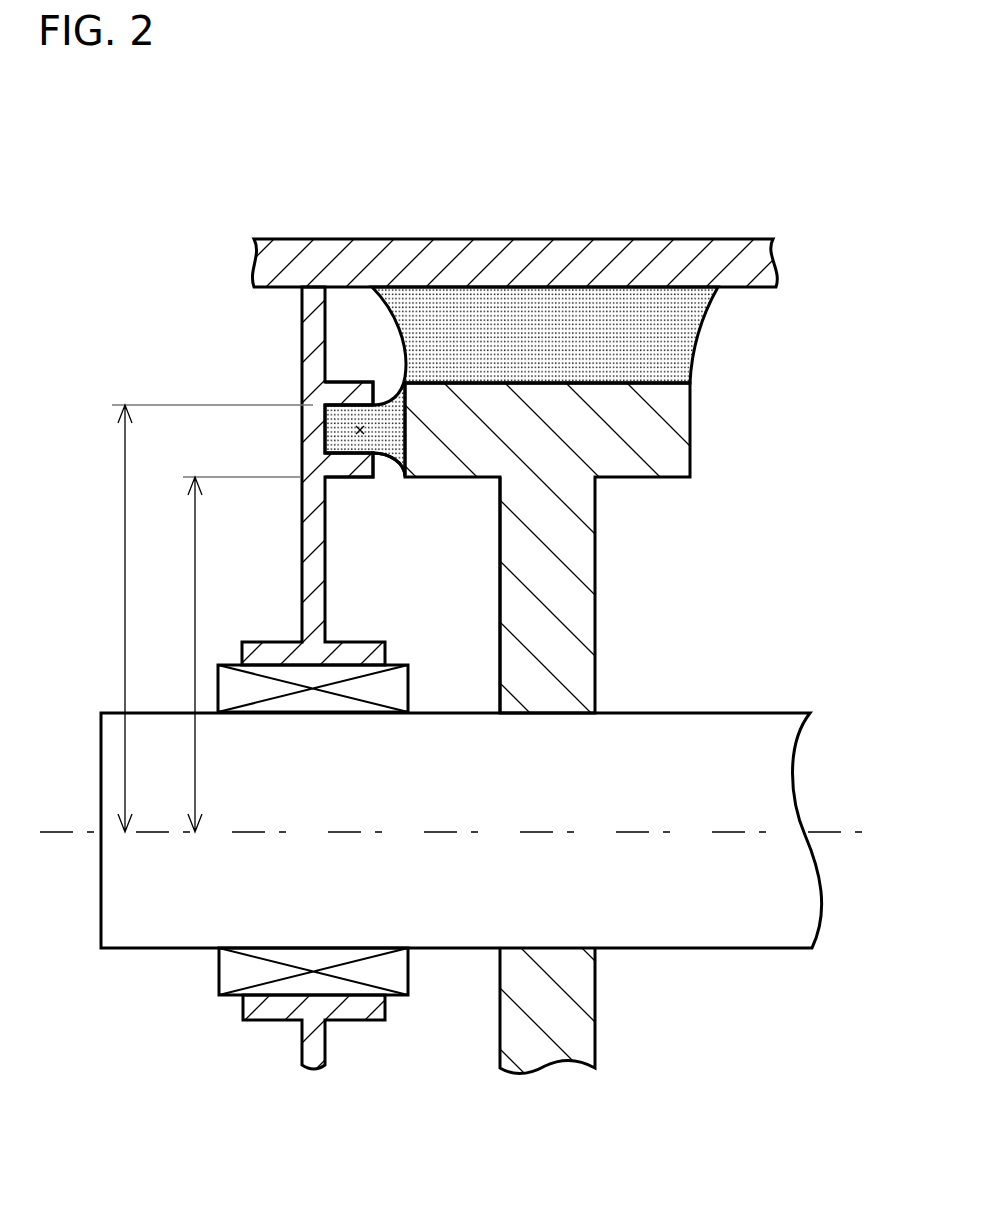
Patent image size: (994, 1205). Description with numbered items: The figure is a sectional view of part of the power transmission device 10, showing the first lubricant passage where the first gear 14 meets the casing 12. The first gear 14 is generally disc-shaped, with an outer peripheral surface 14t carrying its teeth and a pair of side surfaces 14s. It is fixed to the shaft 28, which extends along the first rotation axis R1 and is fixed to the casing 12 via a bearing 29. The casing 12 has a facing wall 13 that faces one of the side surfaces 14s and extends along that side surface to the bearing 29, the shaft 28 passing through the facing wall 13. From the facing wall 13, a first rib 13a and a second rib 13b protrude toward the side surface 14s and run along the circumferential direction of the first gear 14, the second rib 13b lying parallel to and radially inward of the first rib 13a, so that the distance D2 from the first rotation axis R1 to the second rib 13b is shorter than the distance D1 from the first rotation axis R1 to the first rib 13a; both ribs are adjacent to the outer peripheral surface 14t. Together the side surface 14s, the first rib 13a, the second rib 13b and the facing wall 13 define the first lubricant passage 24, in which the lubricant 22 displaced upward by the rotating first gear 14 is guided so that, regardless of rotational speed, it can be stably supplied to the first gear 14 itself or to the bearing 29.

The power transmission device 10 is at (793, 208).
The casing 12 is at (686, 255).
The facing wall 13 is at (302, 335).
The first rib 13a is at (346, 380).
The second rib 13b is at (343, 480).
The first gear 14 is at (779, 480).
The outer peripheral surface 14t is at (668, 382).
The side surfaces 14s is at (498, 605).
The lubricant 22 is at (327, 430).
The first lubricant passage 24 is at (360, 430).
The shaft 28 is at (125, 950).
The bearing 29 is at (290, 707).
The first rotation axis R1 is at (434, 832).
The distance D1 is at (196, 618).
The distance D2 is at (225, 654).